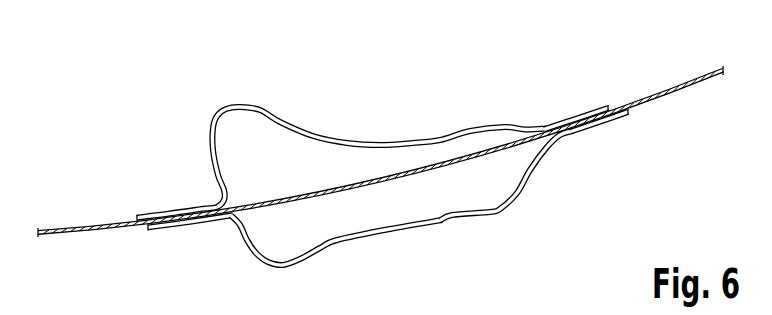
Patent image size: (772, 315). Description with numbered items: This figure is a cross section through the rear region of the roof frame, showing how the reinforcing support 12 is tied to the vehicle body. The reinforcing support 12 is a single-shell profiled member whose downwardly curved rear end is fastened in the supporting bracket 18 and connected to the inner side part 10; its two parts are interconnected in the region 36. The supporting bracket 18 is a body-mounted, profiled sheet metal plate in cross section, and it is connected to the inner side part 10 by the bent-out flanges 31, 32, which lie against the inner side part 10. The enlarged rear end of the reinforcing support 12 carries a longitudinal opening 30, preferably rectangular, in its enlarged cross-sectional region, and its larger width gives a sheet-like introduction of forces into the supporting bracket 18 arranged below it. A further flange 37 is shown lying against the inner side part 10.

The inner side part 10 is at (676, 87).
The reinforcing support 12 is at (477, 225).
The supporting bracket 18 is at (373, 140).
The longitudinal opening 30 is at (383, 234).
The bent-out flange 31 is at (165, 212).
The bent-out flange 32 is at (577, 116).
The region 36 is at (180, 229).
The fourth contact section 37 is at (601, 125).